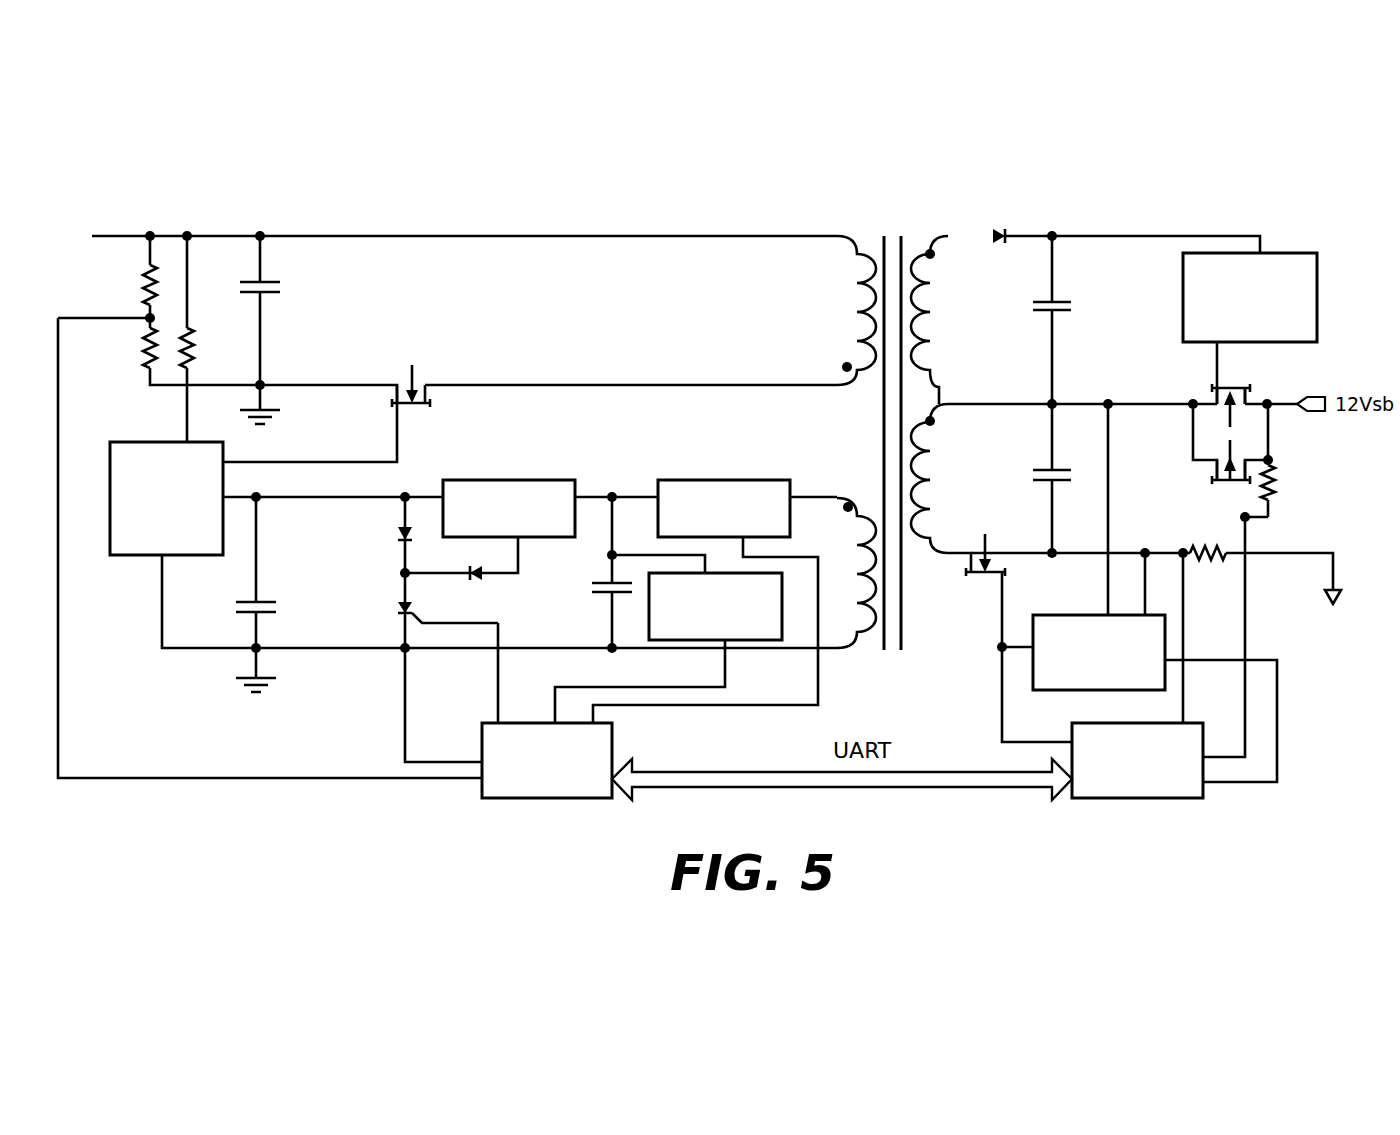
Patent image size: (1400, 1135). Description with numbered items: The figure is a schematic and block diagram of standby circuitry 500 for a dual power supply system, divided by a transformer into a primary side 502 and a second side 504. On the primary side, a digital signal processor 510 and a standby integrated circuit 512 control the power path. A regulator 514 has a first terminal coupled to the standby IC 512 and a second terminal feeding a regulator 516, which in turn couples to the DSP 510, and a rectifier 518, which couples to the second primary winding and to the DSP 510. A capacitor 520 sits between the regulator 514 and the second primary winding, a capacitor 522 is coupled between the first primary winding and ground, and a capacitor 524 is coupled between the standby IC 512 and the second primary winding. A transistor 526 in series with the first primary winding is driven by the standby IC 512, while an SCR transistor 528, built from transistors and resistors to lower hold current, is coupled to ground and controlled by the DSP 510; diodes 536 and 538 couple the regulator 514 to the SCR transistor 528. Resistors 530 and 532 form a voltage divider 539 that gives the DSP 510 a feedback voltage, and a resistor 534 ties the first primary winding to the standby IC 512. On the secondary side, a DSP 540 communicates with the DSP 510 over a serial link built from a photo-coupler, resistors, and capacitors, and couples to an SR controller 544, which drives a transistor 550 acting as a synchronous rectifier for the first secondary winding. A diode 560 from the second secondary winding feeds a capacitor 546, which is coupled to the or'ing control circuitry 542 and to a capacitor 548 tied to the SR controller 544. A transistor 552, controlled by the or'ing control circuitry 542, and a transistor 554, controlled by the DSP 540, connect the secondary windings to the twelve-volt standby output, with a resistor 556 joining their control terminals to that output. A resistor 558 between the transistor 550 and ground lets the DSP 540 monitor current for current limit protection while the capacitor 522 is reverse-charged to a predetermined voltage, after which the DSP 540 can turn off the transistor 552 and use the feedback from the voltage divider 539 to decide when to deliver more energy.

The standby circuitry 500 is at (533, 115).
The primary side 502 is at (646, 170).
The second side 504 is at (992, 170).
The digital signal processor 510 is at (547, 760).
The standby integrated circuit 512 is at (166, 498).
The regulator 514 is at (458, 490).
The regulator 516 is at (714, 642).
The rectifier 518 is at (676, 490).
The capacitor 520 is at (602, 580).
The capacitor 522 is at (268, 280).
The capacitor 524 is at (265, 600).
The transistor 526 is at (420, 362).
The SCR transistor 528 is at (388, 628).
The resistor 530 is at (142, 290).
The resistor 532 is at (148, 355).
The resistor 534 is at (193, 342).
The diode 536 is at (403, 525).
The diode 538 is at (487, 575).
The voltage divider 539 is at (122, 310).
The DSP 540 is at (1137, 760).
The or'ing control circuitry 542 is at (1250, 297).
The SR controller 544 is at (1043, 637).
The capacitor 546 is at (1066, 300).
The capacitor 548 is at (1064, 466).
The transistor 550 is at (993, 572).
The transistor 552 is at (1255, 400).
The transistor 554 is at (1212, 484).
The resistor 556 is at (1272, 482).
The resistor 558 is at (1215, 562).
The diode 560 is at (1010, 230).